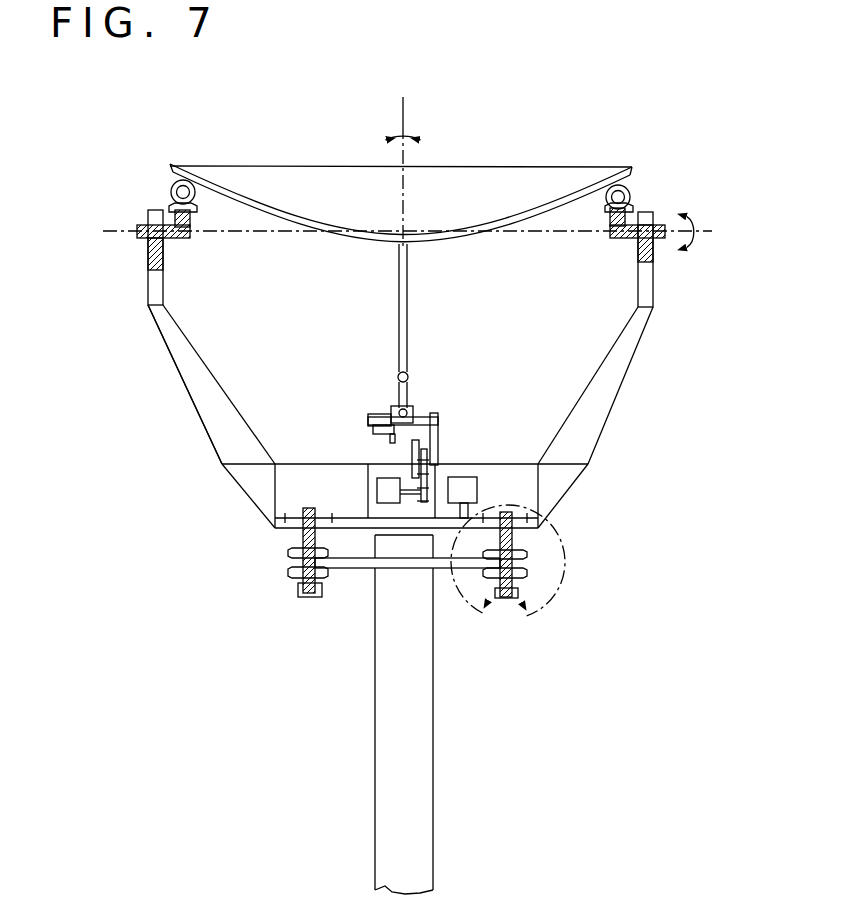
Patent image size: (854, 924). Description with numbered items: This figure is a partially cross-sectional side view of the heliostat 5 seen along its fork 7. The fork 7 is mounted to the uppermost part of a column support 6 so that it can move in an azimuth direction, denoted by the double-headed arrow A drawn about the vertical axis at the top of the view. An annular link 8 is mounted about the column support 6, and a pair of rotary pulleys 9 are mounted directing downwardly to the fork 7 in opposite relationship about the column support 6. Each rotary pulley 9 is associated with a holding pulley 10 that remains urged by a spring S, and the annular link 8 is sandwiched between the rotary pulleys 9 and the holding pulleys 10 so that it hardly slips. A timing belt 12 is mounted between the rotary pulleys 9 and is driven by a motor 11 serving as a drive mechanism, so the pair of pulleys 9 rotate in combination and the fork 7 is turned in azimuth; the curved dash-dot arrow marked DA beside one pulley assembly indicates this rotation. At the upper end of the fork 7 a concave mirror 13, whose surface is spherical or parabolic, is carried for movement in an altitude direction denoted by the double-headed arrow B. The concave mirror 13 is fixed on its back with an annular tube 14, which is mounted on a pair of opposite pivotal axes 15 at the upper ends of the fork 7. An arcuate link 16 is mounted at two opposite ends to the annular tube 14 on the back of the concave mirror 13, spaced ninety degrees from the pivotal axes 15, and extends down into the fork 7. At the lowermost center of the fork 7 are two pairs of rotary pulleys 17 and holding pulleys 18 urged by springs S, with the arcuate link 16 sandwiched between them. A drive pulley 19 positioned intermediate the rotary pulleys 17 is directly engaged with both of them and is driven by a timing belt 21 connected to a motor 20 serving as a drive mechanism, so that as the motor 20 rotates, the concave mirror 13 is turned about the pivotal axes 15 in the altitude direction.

The heliostat 5 is at (170, 437).
The column support 6 is at (418, 768).
The fork 7 is at (602, 408).
The annular link 8 is at (352, 562).
The rotary pulley 9 is at (293, 550).
The holding pulley 10 is at (293, 570).
The motor 11 is at (473, 475).
The timing belt 12 is at (347, 517).
The concave mirror 13 is at (525, 213).
The annular tube 14 is at (633, 192).
The pivotal axis 15 is at (140, 227).
The arcuate link 16 is at (403, 297).
The rotary pulley 17 is at (412, 410).
The holding pulley 18 is at (395, 417).
The drive pulley 19 is at (407, 453).
The motor 20 is at (397, 503).
The timing belt 21 is at (442, 477).
The azimuth direction arrow A is at (408, 122).
The altitude direction arrow B is at (707, 225).
The spring S is at (378, 415).
The rotation direction DA is at (492, 638).